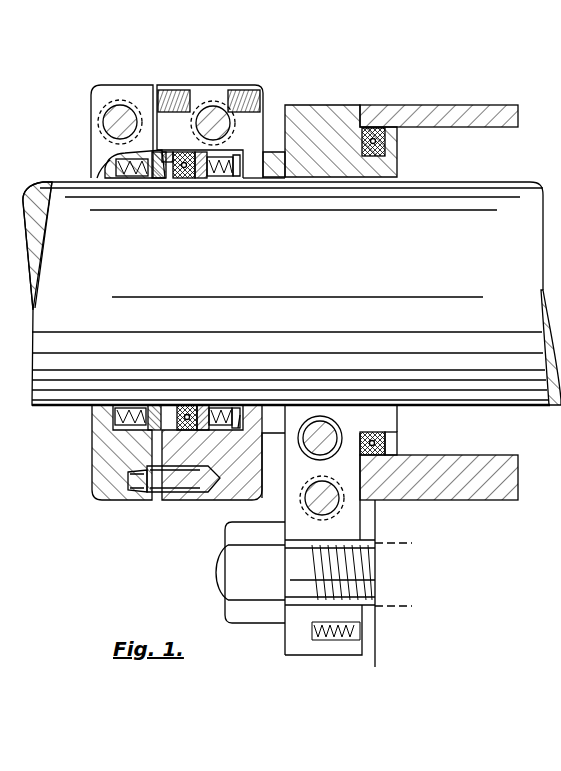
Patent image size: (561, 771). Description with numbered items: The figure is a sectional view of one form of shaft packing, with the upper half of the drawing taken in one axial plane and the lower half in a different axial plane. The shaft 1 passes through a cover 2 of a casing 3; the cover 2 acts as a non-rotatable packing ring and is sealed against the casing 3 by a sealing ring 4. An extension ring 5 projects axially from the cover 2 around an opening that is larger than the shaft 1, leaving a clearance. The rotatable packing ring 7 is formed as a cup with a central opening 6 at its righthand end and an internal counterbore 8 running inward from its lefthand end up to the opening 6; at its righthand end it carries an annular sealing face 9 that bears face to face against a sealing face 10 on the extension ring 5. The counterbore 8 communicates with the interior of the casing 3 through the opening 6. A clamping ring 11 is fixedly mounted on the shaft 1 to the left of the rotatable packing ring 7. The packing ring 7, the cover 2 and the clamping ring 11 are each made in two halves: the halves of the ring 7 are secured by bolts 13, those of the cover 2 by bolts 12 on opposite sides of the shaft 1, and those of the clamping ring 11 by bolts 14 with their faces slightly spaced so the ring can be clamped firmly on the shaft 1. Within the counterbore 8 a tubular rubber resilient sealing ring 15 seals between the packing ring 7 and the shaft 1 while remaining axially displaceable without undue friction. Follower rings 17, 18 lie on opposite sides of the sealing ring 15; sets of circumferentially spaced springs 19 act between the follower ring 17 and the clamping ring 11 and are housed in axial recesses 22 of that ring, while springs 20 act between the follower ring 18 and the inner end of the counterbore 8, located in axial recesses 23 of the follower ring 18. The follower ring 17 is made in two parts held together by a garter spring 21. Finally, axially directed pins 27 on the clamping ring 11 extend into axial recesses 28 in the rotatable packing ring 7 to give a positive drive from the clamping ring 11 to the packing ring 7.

The shaft 1 is at (507, 195).
The cover 2 is at (318, 105).
The casing 3 is at (436, 112).
The sealing ring 4 is at (375, 130).
The extension ring 5 is at (274, 150).
The central opening 6 is at (253, 405).
The rotatable packing ring 7 is at (178, 90).
The counterbore 8 is at (238, 428).
The annular sealing face 9 is at (263, 178).
The sealing face 10 is at (270, 174).
The clamping ring 11 is at (102, 95).
The bolts 12 is at (333, 492).
The bolts 13 is at (213, 106).
The bolts 14 is at (124, 115).
The resilient sealing ring 15 is at (184, 178).
The follower ring 17 is at (165, 178).
The follower ring 18 is at (207, 178).
The springs 19 is at (132, 178).
The springs 20 is at (232, 178).
The garter spring 21 is at (166, 158).
The axial recesses 22 is at (97, 178).
The axial recesses 23 is at (218, 405).
The pins 27 is at (156, 495).
The axial recesses 28 is at (176, 492).